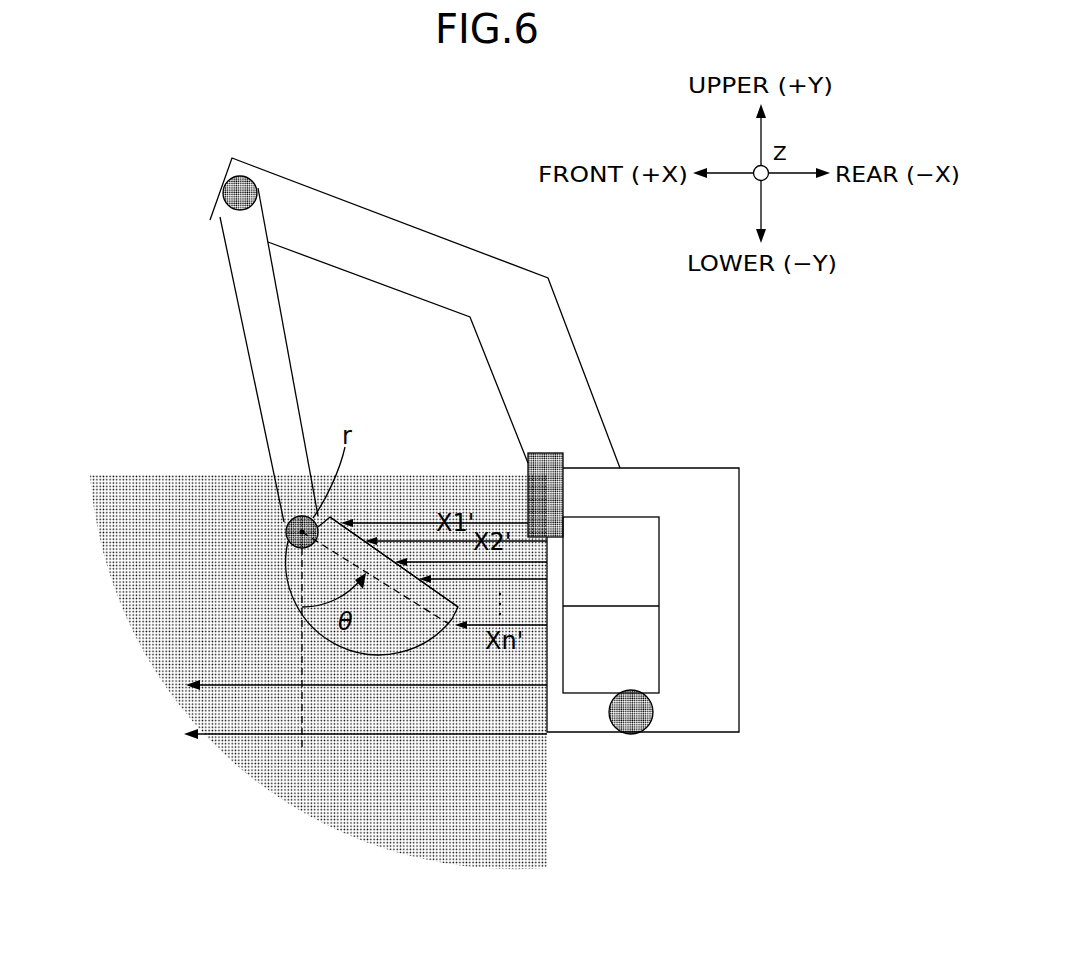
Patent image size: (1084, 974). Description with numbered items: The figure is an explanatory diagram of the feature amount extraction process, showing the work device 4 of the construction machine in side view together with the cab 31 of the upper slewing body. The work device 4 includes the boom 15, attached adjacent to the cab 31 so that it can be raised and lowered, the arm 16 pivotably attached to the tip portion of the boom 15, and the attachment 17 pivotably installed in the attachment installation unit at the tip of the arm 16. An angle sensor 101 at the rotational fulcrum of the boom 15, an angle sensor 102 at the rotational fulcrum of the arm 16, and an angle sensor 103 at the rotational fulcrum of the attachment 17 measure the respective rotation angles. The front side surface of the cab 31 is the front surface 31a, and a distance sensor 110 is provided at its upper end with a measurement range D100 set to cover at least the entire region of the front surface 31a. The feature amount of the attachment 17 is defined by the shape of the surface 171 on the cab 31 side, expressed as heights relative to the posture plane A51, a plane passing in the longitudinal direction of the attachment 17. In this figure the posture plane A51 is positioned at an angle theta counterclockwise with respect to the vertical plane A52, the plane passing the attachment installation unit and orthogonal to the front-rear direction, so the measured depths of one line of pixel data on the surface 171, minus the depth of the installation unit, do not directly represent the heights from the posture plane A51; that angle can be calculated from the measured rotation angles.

The work device 4 is at (493, 198).
The boom 15 is at (548, 315).
The arm 16 is at (280, 342).
The attachment 17 is at (292, 586).
The cab 31 is at (740, 493).
The front surface 31a is at (548, 566).
The angle sensor 101 is at (628, 734).
The angle sensor 102 is at (241, 177).
The angle sensor 103 is at (287, 518).
The distance sensor 110 is at (548, 453).
The surface 171 is at (367, 538).
The measurement range D100 is at (158, 475).
The posture plane A51 is at (423, 617).
The vertical plane A52 is at (303, 657).